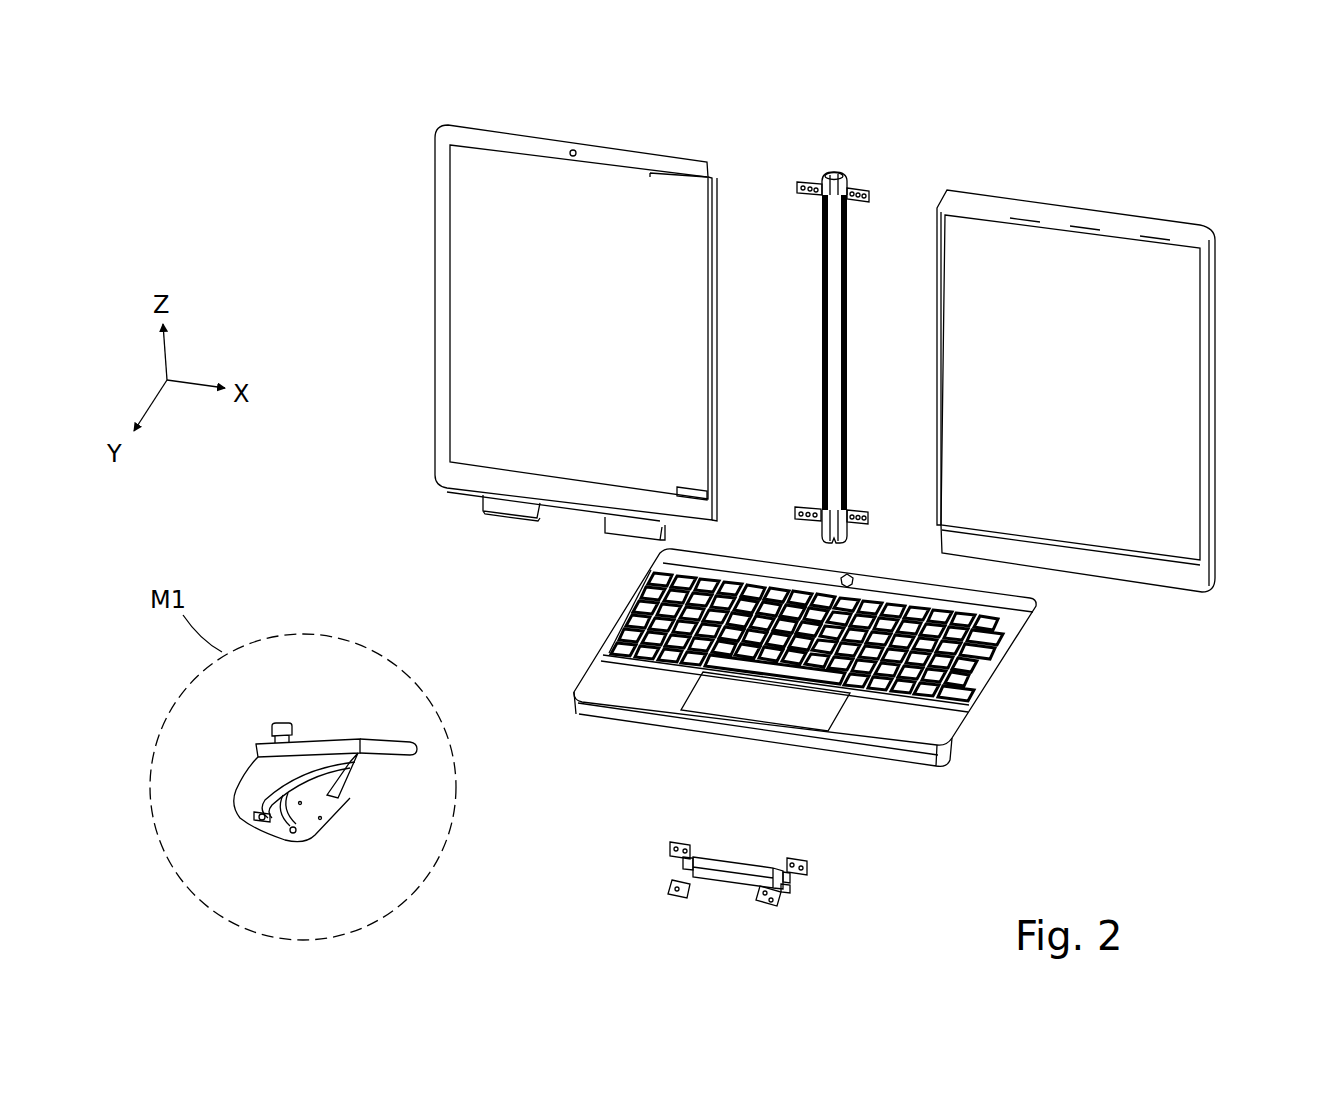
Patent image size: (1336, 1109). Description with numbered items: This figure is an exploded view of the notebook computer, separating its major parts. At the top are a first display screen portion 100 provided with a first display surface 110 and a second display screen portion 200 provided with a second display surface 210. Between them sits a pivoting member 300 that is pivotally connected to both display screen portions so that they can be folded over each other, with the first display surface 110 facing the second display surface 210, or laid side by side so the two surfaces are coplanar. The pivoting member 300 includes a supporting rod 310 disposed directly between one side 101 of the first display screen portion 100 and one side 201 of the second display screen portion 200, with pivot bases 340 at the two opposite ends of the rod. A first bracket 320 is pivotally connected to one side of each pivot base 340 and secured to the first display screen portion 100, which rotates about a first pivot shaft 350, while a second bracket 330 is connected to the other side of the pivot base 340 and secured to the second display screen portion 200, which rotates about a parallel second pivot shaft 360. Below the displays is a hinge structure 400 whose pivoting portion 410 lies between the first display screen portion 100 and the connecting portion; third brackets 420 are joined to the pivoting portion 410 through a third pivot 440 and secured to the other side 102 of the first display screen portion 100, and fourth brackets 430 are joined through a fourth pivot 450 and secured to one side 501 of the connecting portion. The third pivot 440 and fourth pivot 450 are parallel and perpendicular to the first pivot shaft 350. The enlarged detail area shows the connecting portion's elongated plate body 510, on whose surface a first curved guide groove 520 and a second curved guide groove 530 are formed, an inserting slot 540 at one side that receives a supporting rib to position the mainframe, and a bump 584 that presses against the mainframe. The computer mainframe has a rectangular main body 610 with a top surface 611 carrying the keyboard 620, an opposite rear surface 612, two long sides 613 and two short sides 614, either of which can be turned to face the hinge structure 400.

The first display screen portion 100 is at (440, 126).
The side of the first display screen portion 101 is at (714, 372).
The other side of the first display screen portion 102 is at (453, 493).
The first display surface 110 is at (502, 167).
The second display screen portion 200 is at (1217, 228).
The side of the second display screen portion 201 is at (937, 383).
The second display surface 210 is at (1045, 245).
The pivoting member 300 is at (238, 43).
The supporting rod 310 is at (840, 247).
The first bracket 320 is at (800, 188).
The second bracket 330 is at (869, 196).
The pivot base 340 is at (834, 172).
The first pivot shaft 350 is at (826, 180).
The second pivot shaft 360 is at (841, 172).
The hinge structure 400 is at (1226, 753).
The pivoting portion 410 is at (740, 858).
The third bracket 420 is at (808, 856).
The fourth bracket 430 is at (770, 912).
The third pivot 440 is at (792, 878).
The fourth pivot 450 is at (786, 893).
The side of the connecting portion 501 is at (325, 740).
The plate body 510 is at (252, 748).
The first curved guide groove 520 is at (285, 778).
The second curved guide groove 530 is at (263, 822).
The inserting slot 540 is at (356, 792).
The bump 584 is at (290, 828).
The main body 610 is at (583, 665).
The top surface 611 is at (917, 715).
The rear surface 612 is at (893, 765).
The long side 613 is at (1020, 588).
The short side 614 is at (615, 630).
The keyboard 620 is at (993, 660).